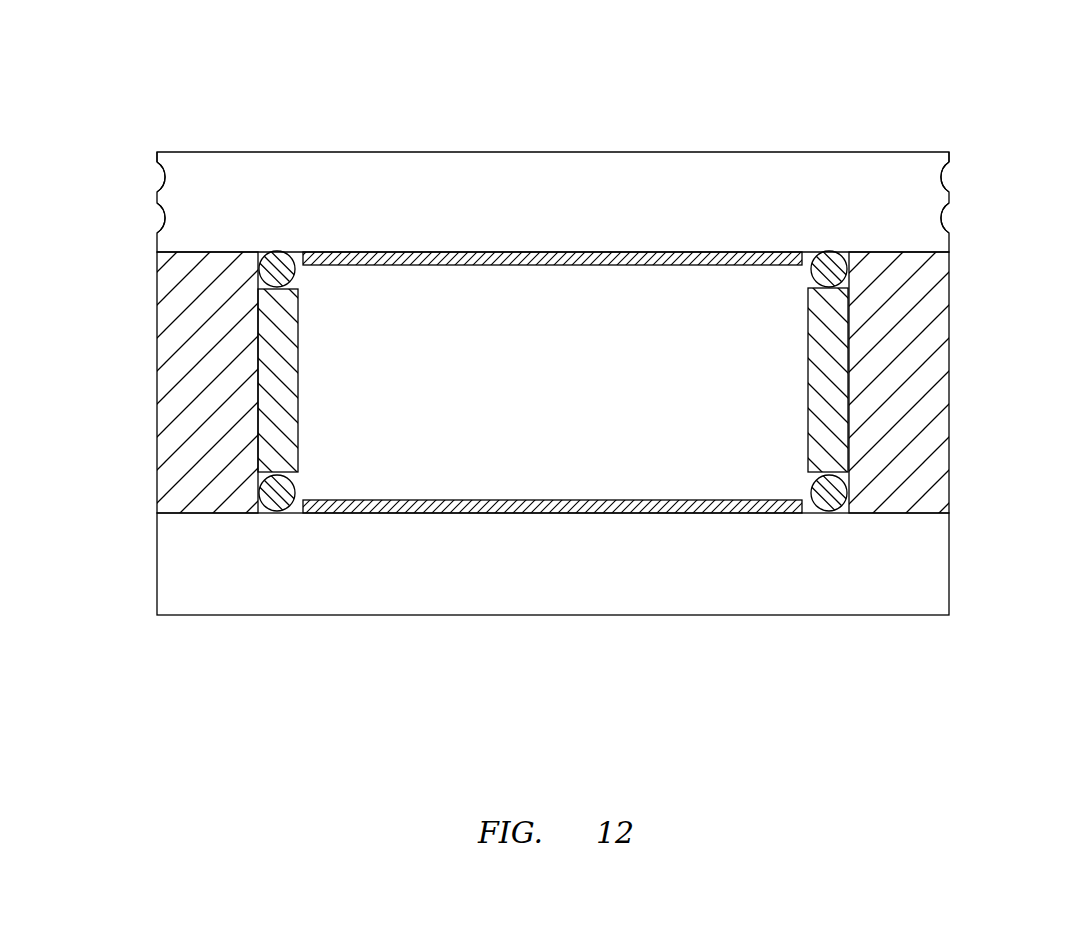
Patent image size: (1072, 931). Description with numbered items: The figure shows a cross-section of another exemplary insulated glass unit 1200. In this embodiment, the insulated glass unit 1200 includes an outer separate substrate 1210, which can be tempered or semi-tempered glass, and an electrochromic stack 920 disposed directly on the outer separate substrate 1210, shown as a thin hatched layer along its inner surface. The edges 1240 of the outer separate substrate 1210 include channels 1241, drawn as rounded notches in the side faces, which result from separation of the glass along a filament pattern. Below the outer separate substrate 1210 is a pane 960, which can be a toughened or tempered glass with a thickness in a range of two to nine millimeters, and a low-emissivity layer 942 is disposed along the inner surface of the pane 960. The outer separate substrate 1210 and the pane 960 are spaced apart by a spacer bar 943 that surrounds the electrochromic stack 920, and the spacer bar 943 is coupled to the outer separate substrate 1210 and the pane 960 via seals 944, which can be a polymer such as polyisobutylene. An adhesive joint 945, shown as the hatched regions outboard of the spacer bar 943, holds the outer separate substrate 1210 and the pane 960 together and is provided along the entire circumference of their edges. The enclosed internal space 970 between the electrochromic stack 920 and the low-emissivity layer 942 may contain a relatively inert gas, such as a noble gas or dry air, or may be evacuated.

The insulated glass unit 1200 is at (122, 60).
The outer separate substrate 1210 is at (543, 150).
The edges 1240 is at (157, 156).
The channels 1241 is at (161, 180).
The adhesive joint 945 is at (172, 385).
The spacer bar 943 is at (295, 385).
The seals 944 is at (288, 272).
The electrochromic stack 920 is at (427, 266).
The low-emissivity layer 942 is at (398, 514).
The internal space 970 is at (574, 397).
The pane 960 is at (475, 598).